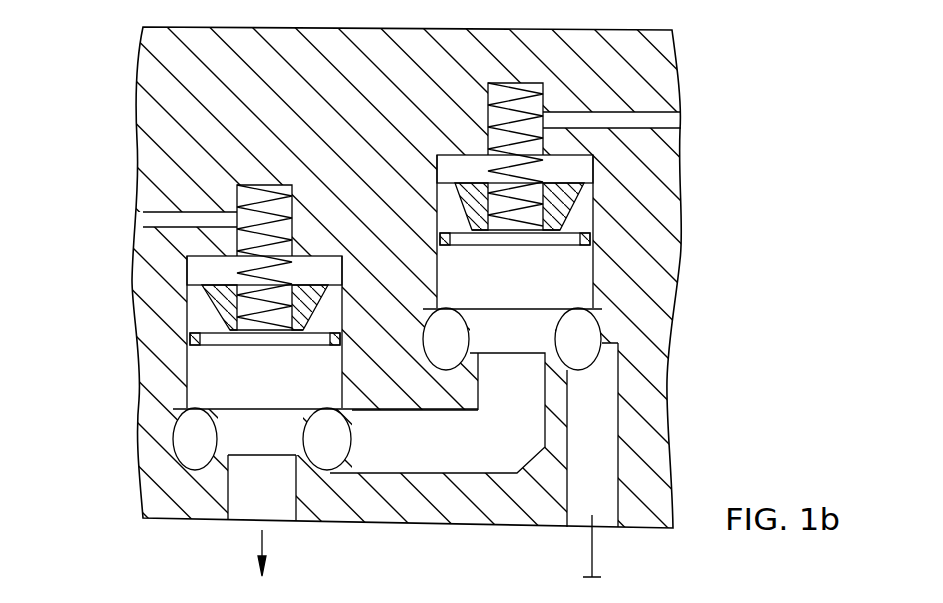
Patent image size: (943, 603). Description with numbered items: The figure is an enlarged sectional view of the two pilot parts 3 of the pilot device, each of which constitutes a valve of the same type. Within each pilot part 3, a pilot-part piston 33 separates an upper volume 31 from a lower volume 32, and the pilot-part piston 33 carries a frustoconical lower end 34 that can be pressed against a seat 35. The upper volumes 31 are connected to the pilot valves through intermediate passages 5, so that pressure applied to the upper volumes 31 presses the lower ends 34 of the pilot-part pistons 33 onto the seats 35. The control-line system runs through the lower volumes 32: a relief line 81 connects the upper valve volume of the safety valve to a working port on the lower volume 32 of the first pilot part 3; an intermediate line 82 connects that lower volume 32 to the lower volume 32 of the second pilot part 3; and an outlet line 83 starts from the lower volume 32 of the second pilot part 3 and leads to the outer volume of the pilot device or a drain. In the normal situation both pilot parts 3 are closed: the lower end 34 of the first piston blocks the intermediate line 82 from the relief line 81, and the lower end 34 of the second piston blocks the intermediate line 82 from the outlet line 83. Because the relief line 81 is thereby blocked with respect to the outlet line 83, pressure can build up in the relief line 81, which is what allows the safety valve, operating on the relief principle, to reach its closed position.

The pilot part 3 is at (690, 77).
The intermediate passage 5 is at (158, 213).
The upper volume 31 is at (323, 258).
The lower volume 32 is at (417, 490).
The pilot-part piston 33 is at (203, 372).
The lower end 34 is at (217, 440).
The seat 35 is at (213, 455).
The relief line 81 is at (605, 448).
The intermediate line 82 is at (468, 500).
The outlet line 83 is at (272, 503).